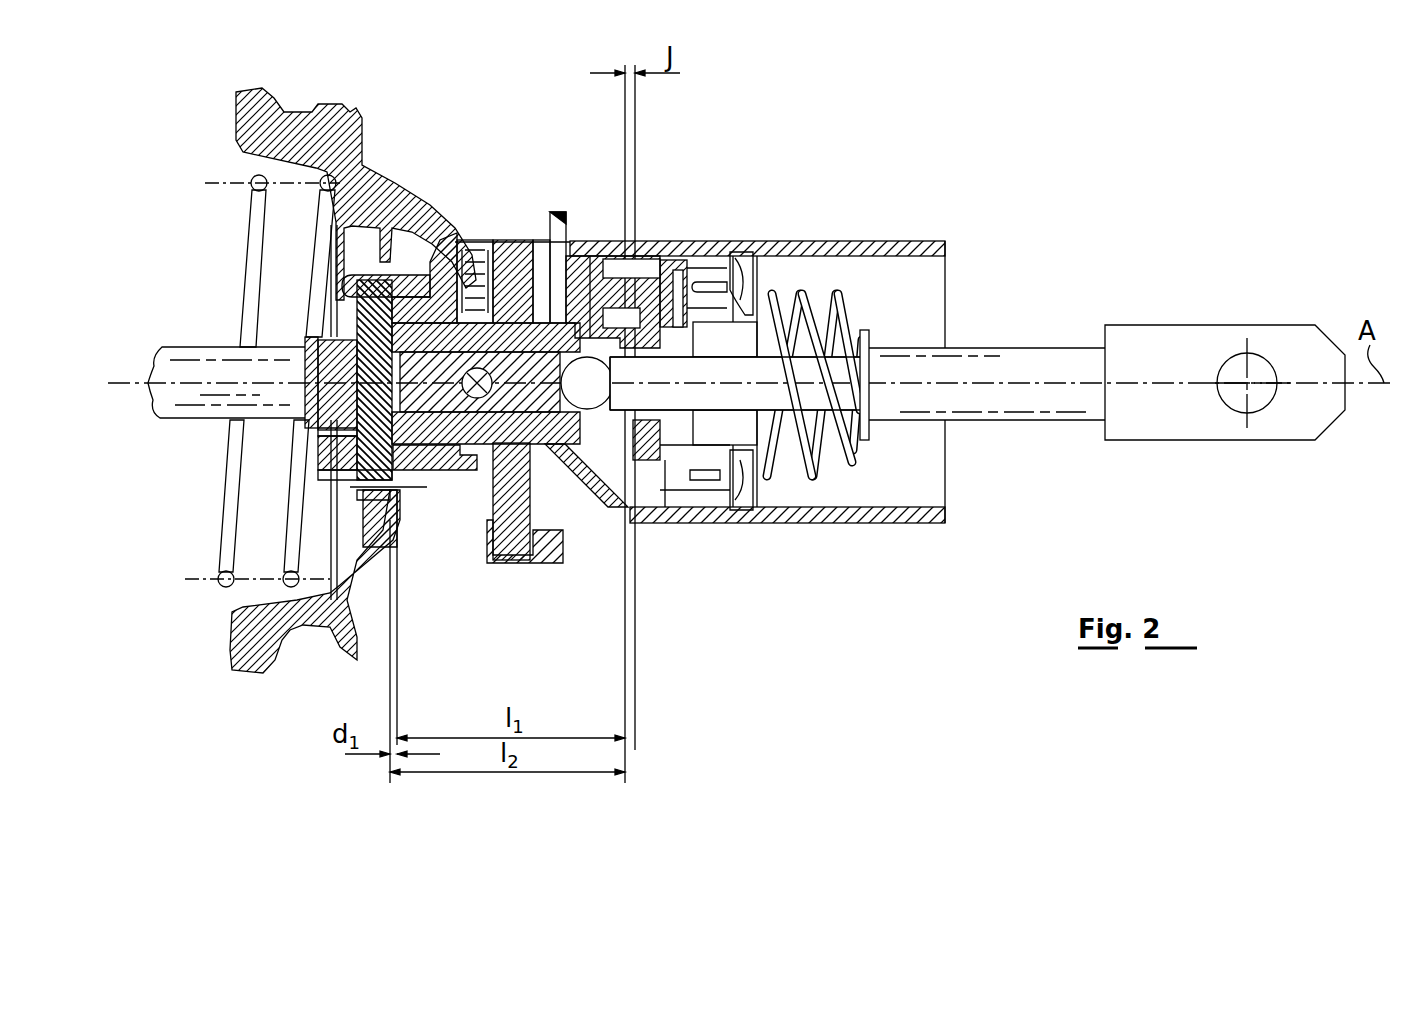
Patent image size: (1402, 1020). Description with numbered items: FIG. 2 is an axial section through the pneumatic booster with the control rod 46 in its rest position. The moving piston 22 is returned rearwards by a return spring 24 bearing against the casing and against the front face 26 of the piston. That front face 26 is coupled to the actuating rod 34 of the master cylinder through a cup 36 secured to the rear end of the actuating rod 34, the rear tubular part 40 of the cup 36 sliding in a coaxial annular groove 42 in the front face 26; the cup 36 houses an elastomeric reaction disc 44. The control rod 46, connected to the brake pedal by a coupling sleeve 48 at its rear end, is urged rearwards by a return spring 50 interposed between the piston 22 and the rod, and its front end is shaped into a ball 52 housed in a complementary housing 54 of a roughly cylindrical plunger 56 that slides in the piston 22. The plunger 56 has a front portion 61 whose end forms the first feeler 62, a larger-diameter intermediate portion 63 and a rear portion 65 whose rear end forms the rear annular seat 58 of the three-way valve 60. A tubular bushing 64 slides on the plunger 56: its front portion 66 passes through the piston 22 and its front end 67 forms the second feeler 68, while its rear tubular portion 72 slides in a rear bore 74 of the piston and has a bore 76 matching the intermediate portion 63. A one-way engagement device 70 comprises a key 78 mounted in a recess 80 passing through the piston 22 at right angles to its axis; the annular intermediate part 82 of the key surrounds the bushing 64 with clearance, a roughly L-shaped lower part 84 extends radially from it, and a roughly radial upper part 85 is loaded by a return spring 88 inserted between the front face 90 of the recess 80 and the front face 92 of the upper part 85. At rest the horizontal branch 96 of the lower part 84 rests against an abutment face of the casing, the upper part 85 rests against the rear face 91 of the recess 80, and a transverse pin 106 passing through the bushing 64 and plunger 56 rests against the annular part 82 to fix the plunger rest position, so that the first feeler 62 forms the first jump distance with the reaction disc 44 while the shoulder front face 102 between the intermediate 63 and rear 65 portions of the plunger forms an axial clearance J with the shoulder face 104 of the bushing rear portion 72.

The moving piston 22 is at (352, 156).
The return spring 24 is at (223, 593).
The front face 26 is at (335, 232).
The actuating rod 34 is at (173, 352).
The cup 36 is at (330, 468).
The rear tubular part 40 is at (333, 490).
The annular groove 42 is at (385, 525).
The reaction disc 44 is at (333, 432).
The control rod 46 is at (1030, 358).
The coupling sleeve 48 is at (1178, 343).
The return spring 50 is at (803, 297).
The ball 52 is at (677, 377).
The housing 54 is at (667, 341).
The plunger 56 is at (562, 545).
The rear annular seat 58 is at (650, 520).
The three-way valve 60 is at (693, 520).
The front portion 61 is at (360, 392).
The first feeler 62 is at (310, 362).
The intermediate portion 63 is at (583, 527).
The tubular bushing 64 is at (423, 252).
The rear portion 65 is at (673, 253).
The front portion 66 is at (483, 253).
The front end 67 is at (343, 300).
The second feeler 68 is at (330, 250).
The one-way engagement device 70 is at (517, 233).
The rear tubular portion 72 is at (600, 245).
The rear bore 74 is at (593, 247).
The bore 76 is at (690, 430).
The key 78 is at (533, 237).
The recess 80 is at (512, 538).
The annular intermediate part 82 is at (506, 382).
The lower part 84 is at (475, 548).
The upper part 85 is at (502, 253).
The return spring 88 is at (457, 250).
The front face 90 is at (437, 265).
The rear face 91 is at (572, 247).
The front face 92 is at (490, 247).
The horizontal branch 96 is at (530, 562).
The shoulder front face 102 is at (655, 262).
The shoulder face 104 is at (645, 255).
The transverse pin 106 is at (432, 447).